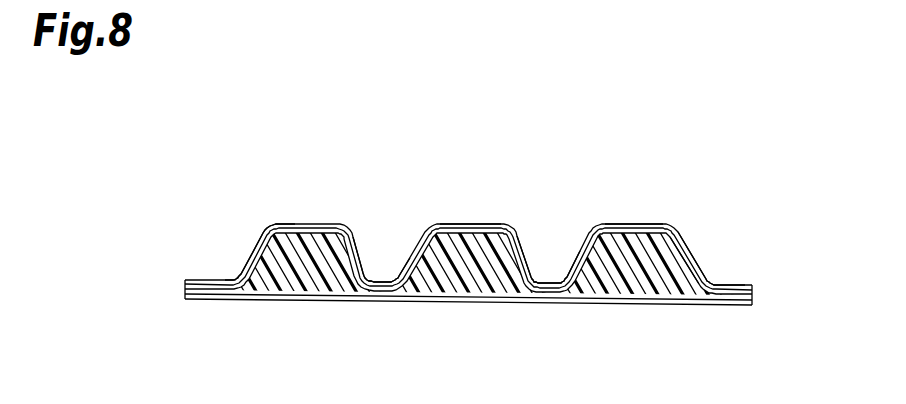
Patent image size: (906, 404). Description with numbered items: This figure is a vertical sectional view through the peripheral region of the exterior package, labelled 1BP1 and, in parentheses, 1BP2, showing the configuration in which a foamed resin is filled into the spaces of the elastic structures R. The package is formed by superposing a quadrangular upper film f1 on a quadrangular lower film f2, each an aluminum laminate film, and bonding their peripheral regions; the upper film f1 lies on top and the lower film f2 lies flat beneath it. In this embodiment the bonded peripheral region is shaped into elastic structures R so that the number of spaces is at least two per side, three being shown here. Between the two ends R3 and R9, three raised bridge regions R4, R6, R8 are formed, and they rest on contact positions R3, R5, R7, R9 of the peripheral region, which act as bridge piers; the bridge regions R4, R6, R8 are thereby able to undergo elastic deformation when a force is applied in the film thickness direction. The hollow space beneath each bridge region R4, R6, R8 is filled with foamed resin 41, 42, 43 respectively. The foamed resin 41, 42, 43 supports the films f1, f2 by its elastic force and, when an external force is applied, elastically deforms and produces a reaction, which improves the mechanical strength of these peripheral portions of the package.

The elastic structure R is at (558, 124).
The bipolar plate (first metal separator) 1BP1 is at (273, 236).
The bipolar plate (second metal separator) 1BP2 is at (468, 219).
The end / contact position R3 is at (193, 280).
The bridge region R4 is at (322, 223).
The contact position R5 is at (386, 282).
The bridge region R6 is at (467, 224).
The contact position R7 is at (546, 283).
The bridge region R8 is at (635, 225).
The end / contact position R9 is at (735, 284).
The upper film f1 is at (683, 257).
The lower film f2 is at (658, 227).
The foamed resin 41 is at (322, 290).
The foamed resin 42 is at (462, 290).
The foamed resin 43 is at (630, 290).